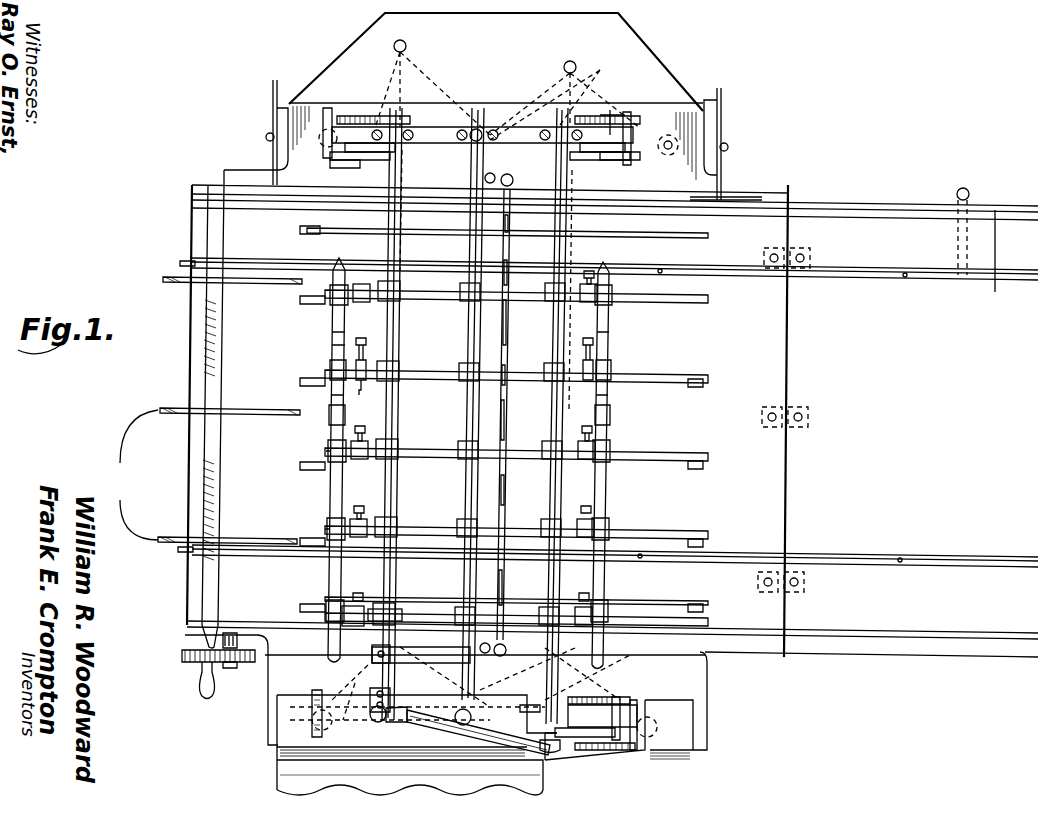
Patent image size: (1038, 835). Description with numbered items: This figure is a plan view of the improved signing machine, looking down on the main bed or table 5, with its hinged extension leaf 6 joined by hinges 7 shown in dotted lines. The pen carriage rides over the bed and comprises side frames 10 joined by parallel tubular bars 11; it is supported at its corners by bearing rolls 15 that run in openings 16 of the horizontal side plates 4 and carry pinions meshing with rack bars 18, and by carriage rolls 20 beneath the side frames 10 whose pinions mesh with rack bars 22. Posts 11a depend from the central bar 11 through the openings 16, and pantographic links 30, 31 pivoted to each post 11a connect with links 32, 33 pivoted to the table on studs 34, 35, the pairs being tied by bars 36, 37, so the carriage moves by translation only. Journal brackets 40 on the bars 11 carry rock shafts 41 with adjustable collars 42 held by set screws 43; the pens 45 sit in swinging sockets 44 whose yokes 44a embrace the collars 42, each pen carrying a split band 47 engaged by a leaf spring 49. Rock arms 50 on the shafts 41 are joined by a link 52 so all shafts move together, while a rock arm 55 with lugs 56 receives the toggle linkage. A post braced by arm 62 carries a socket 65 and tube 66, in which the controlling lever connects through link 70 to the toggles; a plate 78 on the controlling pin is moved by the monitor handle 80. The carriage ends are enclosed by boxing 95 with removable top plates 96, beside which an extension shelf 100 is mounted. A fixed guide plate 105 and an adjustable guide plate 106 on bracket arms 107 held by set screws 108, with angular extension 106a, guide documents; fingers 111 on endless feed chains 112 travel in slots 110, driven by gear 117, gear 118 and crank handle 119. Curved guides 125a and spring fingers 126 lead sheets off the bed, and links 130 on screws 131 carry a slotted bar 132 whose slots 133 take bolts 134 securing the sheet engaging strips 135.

The horizontal side plates 4 is at (690, 118).
The main bed or table 5 is at (718, 425).
The extension leaf 6 is at (934, 421).
The hinges 7 is at (810, 258).
The side frames 10 is at (445, 127).
The parallel tubular bars 11 is at (403, 185).
The post 11a is at (484, 130).
The bearing rolls 15 is at (380, 155).
The openings 16 is at (477, 130).
The rack bars 18 is at (378, 115).
The carriage rolls 20 is at (615, 150).
The rack bars 22 is at (340, 100).
The pantographic link 30 is at (420, 127).
The pantographic link 31 is at (555, 90).
The link 32 is at (355, 100).
The link 33 is at (612, 115).
The stud 34 is at (326, 148).
The stud 35 is at (670, 138).
The bar 36 is at (402, 86).
The bar 37 is at (585, 592).
The journal brackets 40 is at (378, 301).
The rock shafts 41 is at (450, 371).
The adjustable collars 42 is at (361, 392).
The set screws 43 is at (362, 360).
The swinging sockets 44 is at (360, 441).
The yokes 44a is at (334, 485).
The pens or writing members 45 is at (333, 325).
The split band 47 is at (330, 462).
The leaf spring 49 is at (330, 382).
The rock arms 50 is at (400, 365).
The link 52 is at (399, 462).
The rock arm 55 is at (358, 606).
The ears or lugs 56 is at (372, 652).
The bracing arm or plate 62 is at (440, 661).
The socket 65 is at (365, 660).
The tube 66 is at (374, 722).
The link 70 is at (403, 610).
The horizontal plate 78 is at (394, 724).
The monitor handle 80 is at (436, 722).
The boxing 95 is at (280, 118).
The removable top plates 96 is at (668, 705).
The extension shelf or table 100 is at (410, 775).
The vertical guide plate 105 is at (278, 616).
The second guide plate 106 is at (292, 209).
The angular extension 106a is at (1037, 228).
The bracket arms 107 is at (273, 102).
The set screws 108 is at (266, 139).
The slots 110 is at (265, 259).
The sheet engaging fingers 111 is at (658, 273).
The endless feed chains 112 is at (183, 261).
The gear wheel 117 is at (182, 655).
The gear wheel 118 is at (232, 668).
The crank handle 119 is at (204, 696).
The guides 125a is at (195, 280).
The spring fingers 126 is at (268, 285).
The adjustable link 130 is at (514, 181).
The screw 131 is at (495, 175).
The rod or bar 132 is at (508, 342).
The slots 133 is at (510, 240).
The bolts 134 is at (510, 218).
The sheet engaging strips or fingers 135 is at (450, 234).